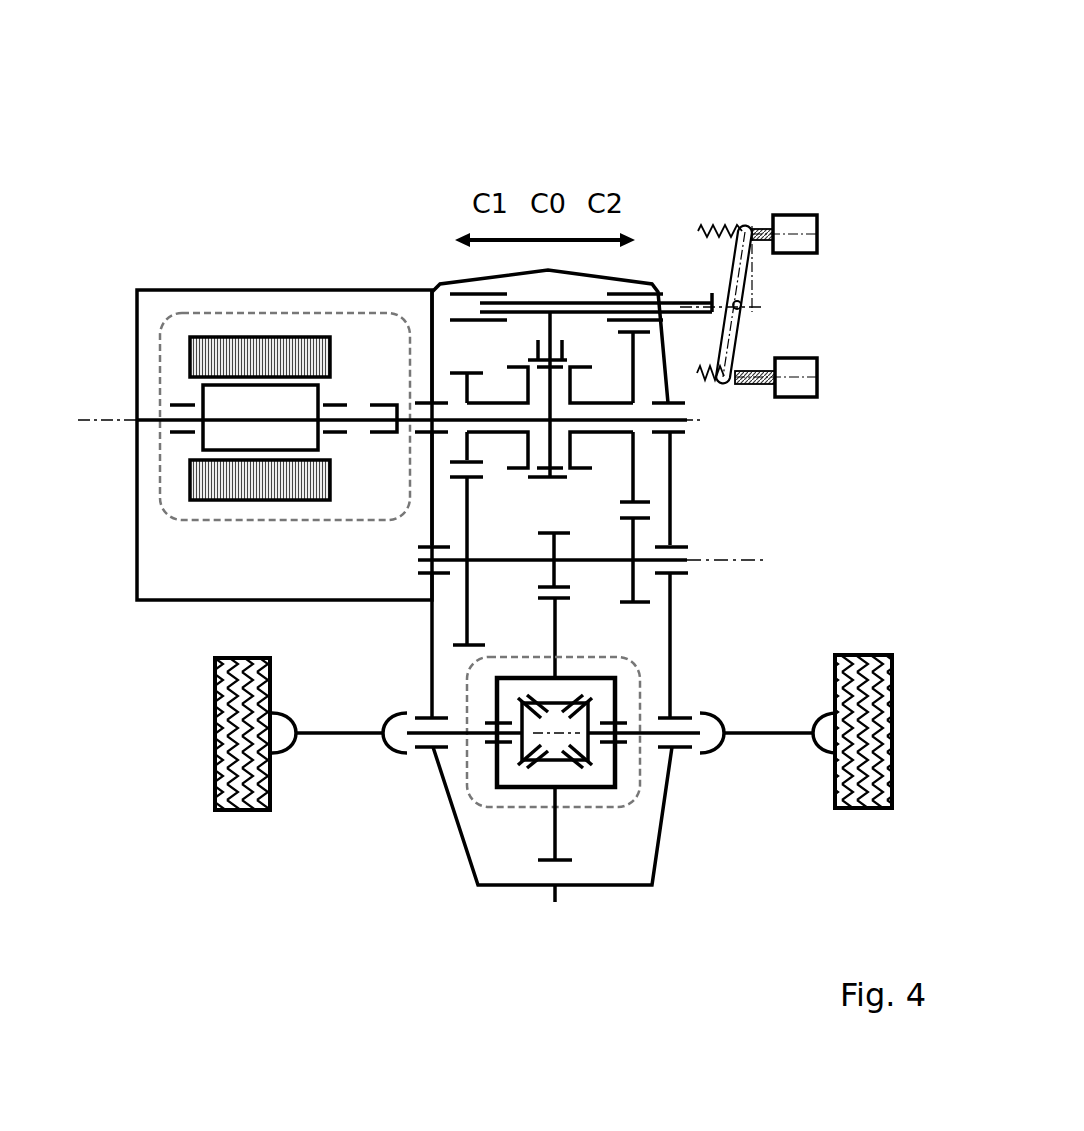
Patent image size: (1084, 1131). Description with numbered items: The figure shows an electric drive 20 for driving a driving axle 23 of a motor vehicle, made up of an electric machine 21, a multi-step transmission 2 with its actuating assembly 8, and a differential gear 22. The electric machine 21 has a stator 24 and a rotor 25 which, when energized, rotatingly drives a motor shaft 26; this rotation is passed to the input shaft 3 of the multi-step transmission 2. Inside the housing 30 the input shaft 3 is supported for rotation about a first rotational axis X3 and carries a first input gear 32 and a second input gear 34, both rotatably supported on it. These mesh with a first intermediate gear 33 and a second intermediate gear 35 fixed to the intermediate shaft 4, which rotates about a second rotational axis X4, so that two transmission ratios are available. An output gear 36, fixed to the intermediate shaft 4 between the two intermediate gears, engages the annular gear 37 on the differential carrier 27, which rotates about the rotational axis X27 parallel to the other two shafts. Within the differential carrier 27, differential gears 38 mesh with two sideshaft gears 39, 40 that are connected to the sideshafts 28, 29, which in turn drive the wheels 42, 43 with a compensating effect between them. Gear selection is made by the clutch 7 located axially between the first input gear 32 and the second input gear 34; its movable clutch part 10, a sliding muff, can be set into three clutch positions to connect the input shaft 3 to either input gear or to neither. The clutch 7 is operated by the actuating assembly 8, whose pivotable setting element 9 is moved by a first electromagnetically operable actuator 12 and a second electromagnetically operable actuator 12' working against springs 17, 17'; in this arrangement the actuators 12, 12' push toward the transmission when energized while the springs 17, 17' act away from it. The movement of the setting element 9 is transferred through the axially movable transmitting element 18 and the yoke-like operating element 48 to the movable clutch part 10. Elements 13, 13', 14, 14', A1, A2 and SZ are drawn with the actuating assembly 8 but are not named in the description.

The multi-step transmission 2 is at (826, 464).
The input shaft 3 is at (460, 423).
The intermediate shaft 4 is at (640, 557).
The clutch 7 is at (536, 493).
The actuating assembly 8 is at (759, 151).
The setting element 9 is at (755, 280).
The movable clutch part 10 is at (530, 357).
The first electromagnetically operable actuator 12 is at (825, 212).
The second electromagnetically operable actuator 12' is at (827, 362).
The actuator piston 13 is at (807, 260).
The second actuator piston 13' is at (801, 405).
The actuating rod 14 is at (777, 198).
The second actuating rod 14' is at (762, 410).
The spring 17 is at (717, 202).
The spring 17' is at (720, 406).
The transmitting element 18 is at (640, 310).
The electric drive 20 is at (376, 97).
The electric machine 21 is at (292, 287).
The differential gear 22 is at (646, 674).
The driving axle 23 is at (124, 724).
The stator 24 is at (310, 350).
The rotor 25 is at (200, 390).
The motor shaft 26 is at (360, 413).
The differential carrier 27 is at (593, 787).
The sideshaft 28 is at (760, 740).
The sideshaft 29 is at (333, 740).
The housing 30 is at (673, 517).
The first input gear 32 is at (460, 392).
The first intermediate gear 33 is at (467, 605).
The second input gear 34 is at (637, 488).
The second intermediate gear 35 is at (637, 587).
The output gear 36 is at (555, 552).
The annular gear 37 is at (558, 633).
The differential gears 38 is at (565, 767).
The sideshaft gear 39 is at (593, 750).
The sideshaft gear 40 is at (523, 743).
The wheel 42 is at (892, 697).
The wheel 43 is at (237, 812).
The operating element 48 is at (557, 337).
The actuating direction A1 is at (753, 190).
The actuating direction A2 is at (755, 350).
The pivot point SZ is at (742, 310).
The first rotational axis X3 is at (728, 462).
The second rotational axis X4 is at (747, 560).
The rotational axis of the differential carrier X27 is at (552, 743).